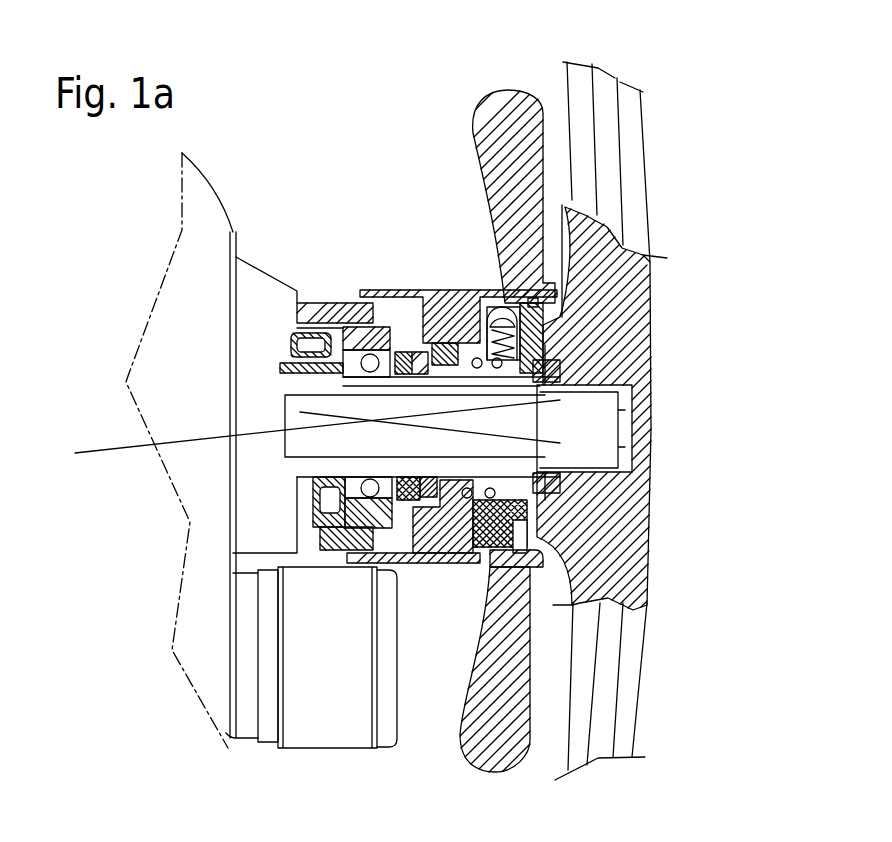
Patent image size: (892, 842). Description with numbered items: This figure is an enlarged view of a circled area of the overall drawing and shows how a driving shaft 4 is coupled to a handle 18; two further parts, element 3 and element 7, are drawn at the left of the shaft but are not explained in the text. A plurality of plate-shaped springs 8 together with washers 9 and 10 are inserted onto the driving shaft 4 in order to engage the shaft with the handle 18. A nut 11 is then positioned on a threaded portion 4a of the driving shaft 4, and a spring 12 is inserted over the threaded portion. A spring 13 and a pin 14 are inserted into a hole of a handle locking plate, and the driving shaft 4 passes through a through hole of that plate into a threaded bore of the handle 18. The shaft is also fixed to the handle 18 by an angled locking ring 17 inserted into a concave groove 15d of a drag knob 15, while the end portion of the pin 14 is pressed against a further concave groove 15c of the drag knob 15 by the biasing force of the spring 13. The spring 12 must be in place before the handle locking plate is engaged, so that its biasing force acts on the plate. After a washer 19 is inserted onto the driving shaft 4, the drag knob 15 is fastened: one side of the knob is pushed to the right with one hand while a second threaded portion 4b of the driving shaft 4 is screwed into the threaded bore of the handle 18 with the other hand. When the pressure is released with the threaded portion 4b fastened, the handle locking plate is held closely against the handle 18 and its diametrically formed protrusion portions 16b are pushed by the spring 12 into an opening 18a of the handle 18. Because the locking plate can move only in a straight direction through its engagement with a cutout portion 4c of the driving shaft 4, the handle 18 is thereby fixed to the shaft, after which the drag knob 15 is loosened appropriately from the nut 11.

The housing 3 is at (200, 212).
The driving shaft 4 is at (605, 437).
The threaded portion 4a is at (607, 472).
The threaded portion 4b is at (602, 397).
The cutout portion 4c is at (306, 434).
The bearing 7 is at (358, 345).
The plate-shaped springs 8 is at (412, 352).
The washer 9 is at (425, 567).
The washer 10 is at (443, 567).
The nut 11 is at (438, 300).
The spring 12 is at (462, 312).
The spring 13 is at (484, 312).
The pin 14 is at (500, 320).
The drag knob 15 is at (518, 88).
The concave groove 15c is at (500, 547).
The concave groove 15d is at (503, 328).
The protrusion portions 16b is at (605, 330).
The angled locking ring 17 is at (605, 290).
The handle 18 is at (633, 210).
The opening 18a is at (543, 508).
The washer 19 is at (600, 362).